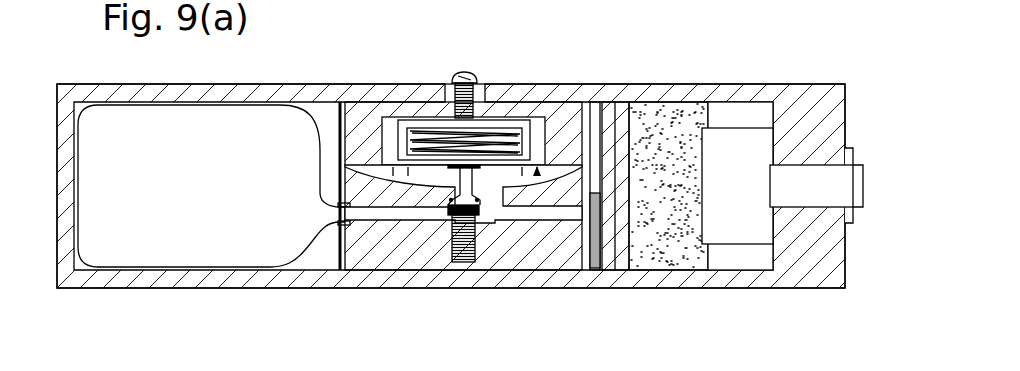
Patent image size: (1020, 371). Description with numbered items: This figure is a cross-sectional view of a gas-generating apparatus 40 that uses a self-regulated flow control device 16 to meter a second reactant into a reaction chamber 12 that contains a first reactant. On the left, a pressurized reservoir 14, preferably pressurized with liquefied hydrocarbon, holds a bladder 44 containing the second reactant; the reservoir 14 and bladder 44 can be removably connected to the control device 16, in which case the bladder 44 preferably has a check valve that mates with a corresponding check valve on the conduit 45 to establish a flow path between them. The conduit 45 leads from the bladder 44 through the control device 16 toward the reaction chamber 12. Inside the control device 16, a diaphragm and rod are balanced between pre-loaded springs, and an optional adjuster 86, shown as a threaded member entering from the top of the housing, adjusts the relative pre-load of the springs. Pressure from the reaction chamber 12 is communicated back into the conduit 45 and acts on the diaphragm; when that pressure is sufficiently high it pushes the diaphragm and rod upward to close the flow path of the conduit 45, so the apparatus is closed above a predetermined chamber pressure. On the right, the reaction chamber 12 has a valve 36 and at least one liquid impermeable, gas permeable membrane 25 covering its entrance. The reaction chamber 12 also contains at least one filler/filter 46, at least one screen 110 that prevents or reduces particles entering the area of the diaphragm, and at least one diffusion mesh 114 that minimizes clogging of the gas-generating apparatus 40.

The gas-generating apparatus 40 is at (101, 49).
The reservoir 14 is at (328, 120).
The self-regulated flow control device 16 is at (443, 73).
The adjuster 86 is at (470, 78).
The filler/filter 46 is at (624, 115).
The reaction chamber 12 is at (658, 115).
The liquid impermeable, gas permeable membrane 25 is at (754, 182).
The valve 36 is at (848, 177).
The bladder 44 is at (148, 253).
The conduit 45 is at (388, 217).
The screen 110 is at (593, 267).
The diffusion mesh 114 is at (742, 223).